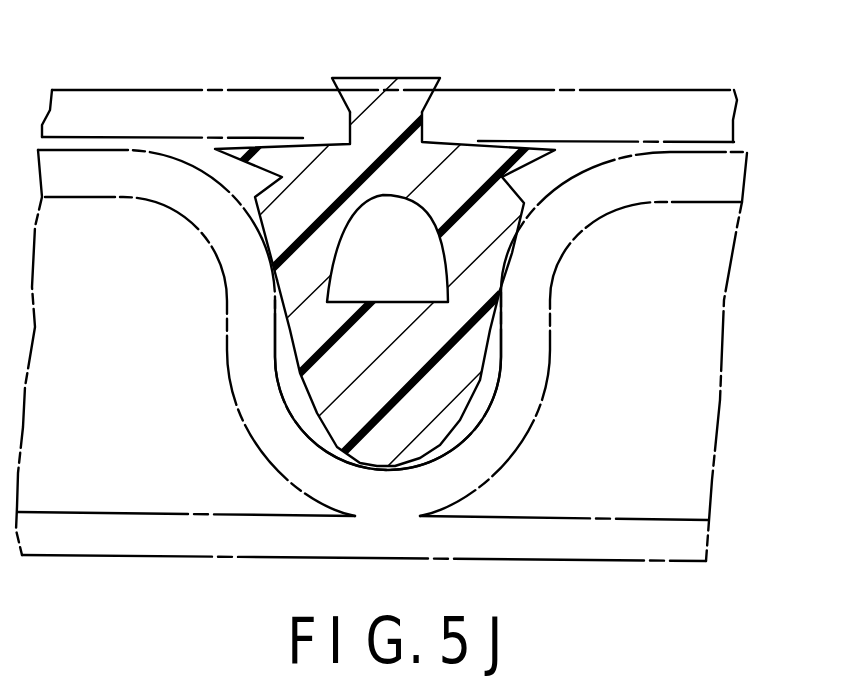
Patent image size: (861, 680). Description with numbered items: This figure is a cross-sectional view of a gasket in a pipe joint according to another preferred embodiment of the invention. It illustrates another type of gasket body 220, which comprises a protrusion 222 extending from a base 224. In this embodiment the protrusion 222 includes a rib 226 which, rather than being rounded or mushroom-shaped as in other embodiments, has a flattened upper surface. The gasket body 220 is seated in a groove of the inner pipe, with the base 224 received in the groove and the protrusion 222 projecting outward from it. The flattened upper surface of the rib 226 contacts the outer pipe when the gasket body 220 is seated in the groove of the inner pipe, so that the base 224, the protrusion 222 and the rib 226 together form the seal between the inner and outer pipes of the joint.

The gasket body 220 is at (382, 237).
The protrusion 222 is at (418, 167).
The base 224 is at (300, 309).
The rib 226 is at (410, 95).